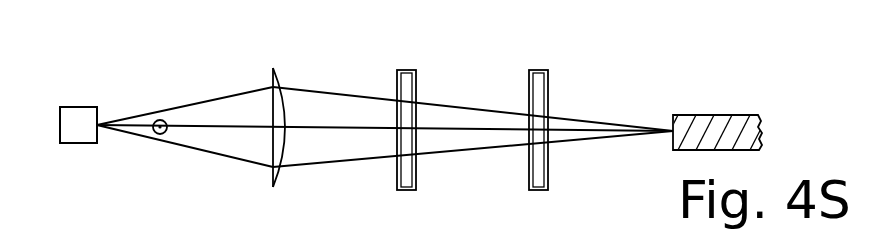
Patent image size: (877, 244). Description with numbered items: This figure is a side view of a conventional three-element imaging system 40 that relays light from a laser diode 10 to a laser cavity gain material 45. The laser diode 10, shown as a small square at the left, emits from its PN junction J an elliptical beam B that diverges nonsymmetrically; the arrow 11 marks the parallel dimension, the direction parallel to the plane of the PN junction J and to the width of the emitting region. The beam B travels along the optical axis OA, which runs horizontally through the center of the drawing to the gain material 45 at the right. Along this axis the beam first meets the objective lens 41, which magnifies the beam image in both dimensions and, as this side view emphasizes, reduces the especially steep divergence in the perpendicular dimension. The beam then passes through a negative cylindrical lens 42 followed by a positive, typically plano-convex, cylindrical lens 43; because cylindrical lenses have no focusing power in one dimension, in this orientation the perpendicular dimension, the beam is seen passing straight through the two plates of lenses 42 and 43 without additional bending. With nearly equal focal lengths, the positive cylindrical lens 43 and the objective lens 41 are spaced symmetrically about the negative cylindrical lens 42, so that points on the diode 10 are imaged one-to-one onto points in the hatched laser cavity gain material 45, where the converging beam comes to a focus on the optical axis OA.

The laser diode 10 is at (60, 152).
The arrow 11 is at (167, 134).
The conventional imaging system 40 is at (730, 68).
The objective lens 41 is at (272, 82).
The negative cylindrical lens 42 is at (396, 72).
The positive cylindrical lens 43 is at (530, 80).
The laser cavity gain material 45 is at (680, 115).
The PN junction J is at (102, 113).
The elliptical beam B is at (213, 127).
The optical axis OA is at (452, 131).